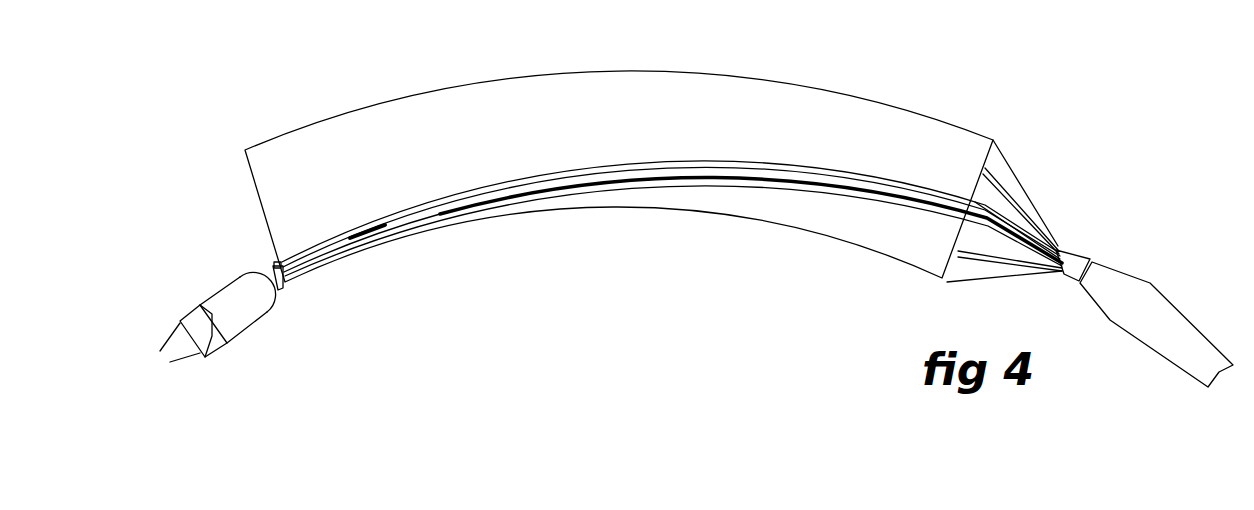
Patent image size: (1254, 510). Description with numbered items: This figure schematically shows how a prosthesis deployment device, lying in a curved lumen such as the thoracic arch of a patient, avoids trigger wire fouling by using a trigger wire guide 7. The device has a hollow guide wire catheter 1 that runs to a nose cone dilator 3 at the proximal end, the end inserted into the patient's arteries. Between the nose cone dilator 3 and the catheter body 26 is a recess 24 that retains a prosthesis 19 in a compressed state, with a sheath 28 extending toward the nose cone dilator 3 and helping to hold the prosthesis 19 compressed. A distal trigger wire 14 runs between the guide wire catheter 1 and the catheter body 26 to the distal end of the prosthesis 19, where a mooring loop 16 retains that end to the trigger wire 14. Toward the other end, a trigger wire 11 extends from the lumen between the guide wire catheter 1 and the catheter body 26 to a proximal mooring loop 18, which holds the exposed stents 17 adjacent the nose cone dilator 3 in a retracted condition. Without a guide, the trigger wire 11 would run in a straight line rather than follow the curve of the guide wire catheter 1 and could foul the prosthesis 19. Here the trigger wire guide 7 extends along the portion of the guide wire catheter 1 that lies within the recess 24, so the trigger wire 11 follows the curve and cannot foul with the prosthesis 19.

The prosthesis 19 is at (478, 108).
The trigger wire guide 7 is at (652, 165).
The guide wire catheter 1 is at (562, 192).
The recess 24 is at (627, 190).
The exposed stents 17 is at (1017, 197).
The proximal mooring loop 18 is at (1070, 247).
The nose cone dilator 3 is at (1145, 303).
The trigger wire 11 is at (172, 362).
The trigger wire 14 is at (298, 241).
The sheath 28 is at (250, 330).
The catheter body 26 is at (265, 292).
The mooring loop 16 is at (277, 265).